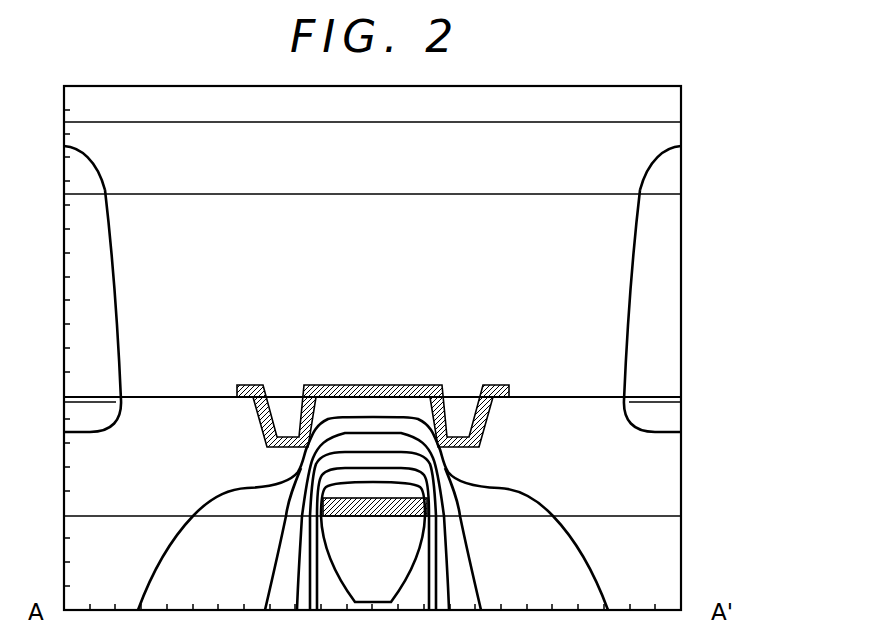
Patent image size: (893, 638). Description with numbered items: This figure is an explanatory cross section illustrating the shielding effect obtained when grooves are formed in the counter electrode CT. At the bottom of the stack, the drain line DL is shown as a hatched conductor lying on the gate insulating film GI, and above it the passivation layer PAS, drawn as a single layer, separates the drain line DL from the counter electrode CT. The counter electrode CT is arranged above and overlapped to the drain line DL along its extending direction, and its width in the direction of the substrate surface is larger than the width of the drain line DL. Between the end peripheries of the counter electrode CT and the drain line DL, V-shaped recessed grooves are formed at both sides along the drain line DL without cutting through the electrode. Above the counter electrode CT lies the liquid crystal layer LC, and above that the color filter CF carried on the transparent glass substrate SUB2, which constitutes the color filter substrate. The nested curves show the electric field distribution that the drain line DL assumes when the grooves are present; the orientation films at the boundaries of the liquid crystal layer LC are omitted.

The transparent substrate SUB2 is at (663, 104).
The color filter CF is at (632, 166).
The liquid crystal layer LC is at (608, 316).
The counter electrode CT is at (376, 384).
The passivation layer PAS is at (663, 485).
The drain line DL is at (375, 518).
The gate insulating film GI is at (672, 561).